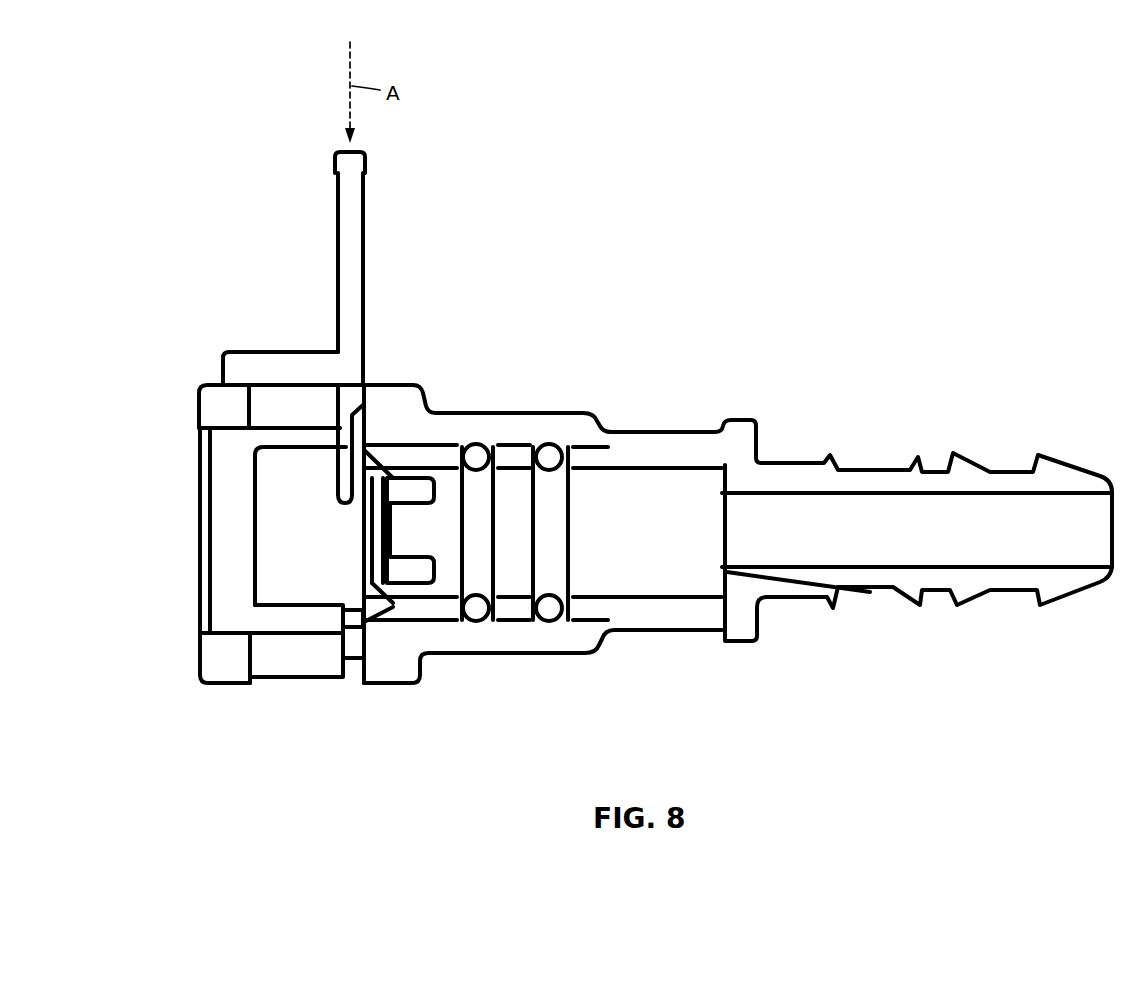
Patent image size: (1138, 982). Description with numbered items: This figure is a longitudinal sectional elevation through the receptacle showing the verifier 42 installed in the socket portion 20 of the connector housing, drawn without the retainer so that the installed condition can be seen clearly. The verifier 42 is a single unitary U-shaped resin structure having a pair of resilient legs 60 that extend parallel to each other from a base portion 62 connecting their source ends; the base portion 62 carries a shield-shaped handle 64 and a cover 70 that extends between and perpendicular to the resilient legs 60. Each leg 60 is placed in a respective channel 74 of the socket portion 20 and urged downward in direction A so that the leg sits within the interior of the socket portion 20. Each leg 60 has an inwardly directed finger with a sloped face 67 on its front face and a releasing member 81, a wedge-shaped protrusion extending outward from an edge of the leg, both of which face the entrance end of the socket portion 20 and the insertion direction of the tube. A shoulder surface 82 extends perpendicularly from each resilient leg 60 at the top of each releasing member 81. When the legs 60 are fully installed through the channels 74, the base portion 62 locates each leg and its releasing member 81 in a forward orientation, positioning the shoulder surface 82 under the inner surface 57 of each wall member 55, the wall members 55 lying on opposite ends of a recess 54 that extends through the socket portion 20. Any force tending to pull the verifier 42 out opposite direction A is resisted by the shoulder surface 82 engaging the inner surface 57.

The verifier 42 is at (248, 152).
The socket portion 20 is at (197, 638).
The wall member 55 is at (214, 383).
The recess 54 is at (277, 418).
The inner surface 57 is at (318, 447).
The shoulder surface 82 is at (335, 450).
The releasing member 81 is at (347, 478).
The cover 70 is at (275, 353).
The channel 74 is at (337, 398).
The handle 64 is at (365, 243).
The base portion 62 is at (352, 403).
The resilient leg 60 is at (372, 447).
The sloped face 67 is at (365, 458).